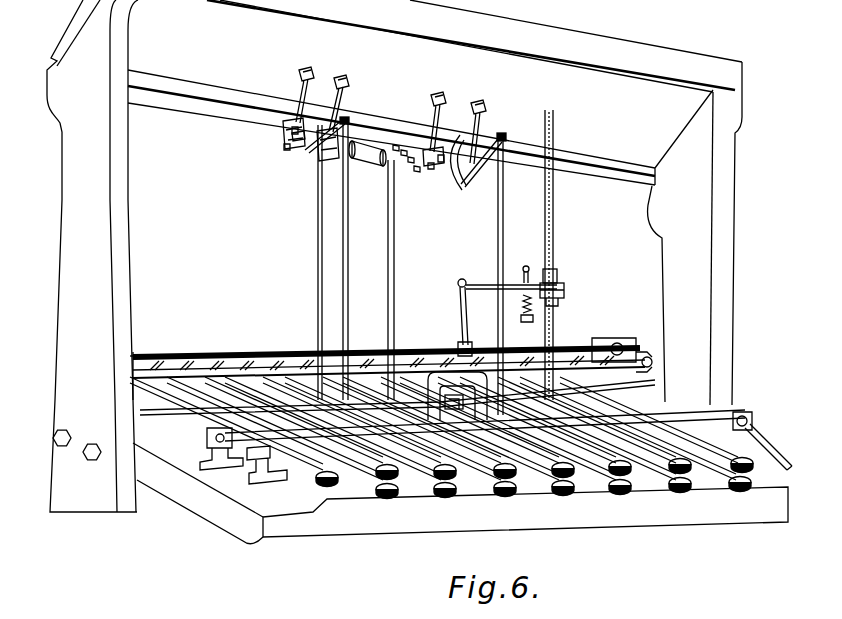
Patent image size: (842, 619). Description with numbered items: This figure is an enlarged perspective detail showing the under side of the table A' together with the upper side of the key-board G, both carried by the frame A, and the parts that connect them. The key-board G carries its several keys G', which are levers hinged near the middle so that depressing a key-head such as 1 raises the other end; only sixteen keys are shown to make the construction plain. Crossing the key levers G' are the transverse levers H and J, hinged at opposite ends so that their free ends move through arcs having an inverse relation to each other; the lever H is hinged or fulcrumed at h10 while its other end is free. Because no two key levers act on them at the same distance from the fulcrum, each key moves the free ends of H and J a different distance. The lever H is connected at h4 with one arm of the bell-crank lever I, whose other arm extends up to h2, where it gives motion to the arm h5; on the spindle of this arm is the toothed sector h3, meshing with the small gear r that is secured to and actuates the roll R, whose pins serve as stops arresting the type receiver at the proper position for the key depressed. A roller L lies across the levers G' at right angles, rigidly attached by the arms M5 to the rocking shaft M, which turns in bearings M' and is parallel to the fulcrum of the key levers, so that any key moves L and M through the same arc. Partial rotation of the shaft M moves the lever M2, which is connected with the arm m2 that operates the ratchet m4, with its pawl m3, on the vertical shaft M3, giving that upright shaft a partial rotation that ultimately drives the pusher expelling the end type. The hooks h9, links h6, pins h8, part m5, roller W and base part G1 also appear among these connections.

The frame A is at (394, 256).
The table A' is at (435, 92).
The hooks h9 is at (464, 110).
The arm h5 is at (475, 170).
The links h6 is at (462, 190).
The connection point of bell-crank lever h2 is at (507, 134).
The pins h8 is at (438, 163).
The toothed sector h3 is at (432, 172).
The small gear r is at (290, 138).
The roll R is at (378, 168).
The bell-crank lever I is at (415, 269).
The vertical shaft M3 is at (560, 255).
The transverse lever J is at (390, 250).
The keys G' is at (389, 360).
The roller L is at (366, 370).
The rocking shaft M is at (279, 343).
The arms M5 is at (618, 345).
The lever M2 is at (465, 281).
The arm m2 is at (522, 272).
The pawl m3 is at (520, 298).
The block m5 is at (521, 319).
The ratchet m4 is at (565, 290).
The bearings M' is at (612, 338).
The roller W is at (654, 362).
The transverse lever H is at (485, 425).
The fulcrum of transverse lever h10 is at (757, 420).
The key-head 1 is at (772, 448).
The key-board G is at (460, 493).
The base part G1 is at (491, 438).
The connection of lever H to bell-crank h4 is at (540, 497).